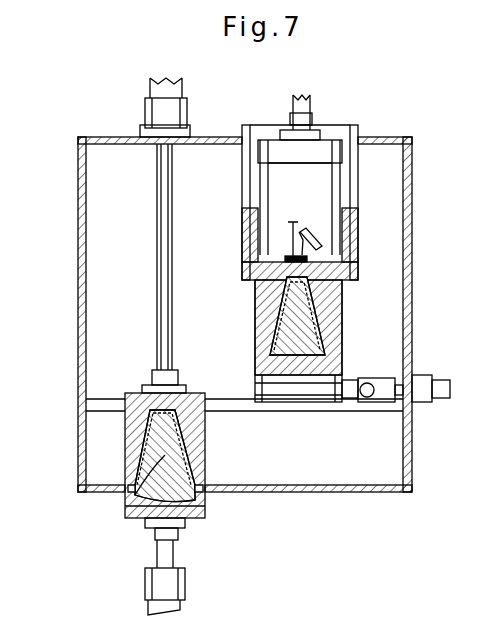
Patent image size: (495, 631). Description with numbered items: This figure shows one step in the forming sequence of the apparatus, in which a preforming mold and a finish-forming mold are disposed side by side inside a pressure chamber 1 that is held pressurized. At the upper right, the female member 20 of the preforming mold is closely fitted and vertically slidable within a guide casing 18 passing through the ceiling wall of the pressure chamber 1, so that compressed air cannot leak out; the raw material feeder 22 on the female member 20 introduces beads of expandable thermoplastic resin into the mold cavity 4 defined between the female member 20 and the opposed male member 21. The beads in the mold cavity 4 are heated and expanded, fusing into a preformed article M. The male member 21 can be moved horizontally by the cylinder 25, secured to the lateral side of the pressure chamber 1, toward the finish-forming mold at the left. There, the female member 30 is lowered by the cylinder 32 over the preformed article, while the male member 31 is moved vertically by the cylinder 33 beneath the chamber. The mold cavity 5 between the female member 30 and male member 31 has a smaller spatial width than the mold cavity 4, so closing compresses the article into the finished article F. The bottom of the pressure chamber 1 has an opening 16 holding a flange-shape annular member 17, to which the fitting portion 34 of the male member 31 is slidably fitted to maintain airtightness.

The pressure chamber 1 is at (414, 167).
The mold cavity 4 is at (340, 316).
The mold cavity 5 is at (135, 443).
The opening 16 is at (205, 484).
The flange-shape annular member 17 is at (125, 495).
The guide casing 18 is at (360, 192).
The female member 20 is at (345, 292).
The male member 21 is at (345, 367).
The raw material feeder 22 is at (302, 235).
The cylinder 25 is at (428, 403).
The female member 30 is at (125, 423).
The male member 31 is at (128, 506).
The cylinder 32 is at (145, 117).
The cylinder 33 is at (150, 585).
The fitting portion 34 is at (208, 505).
The finished article F is at (160, 452).
The preformed article M is at (345, 340).